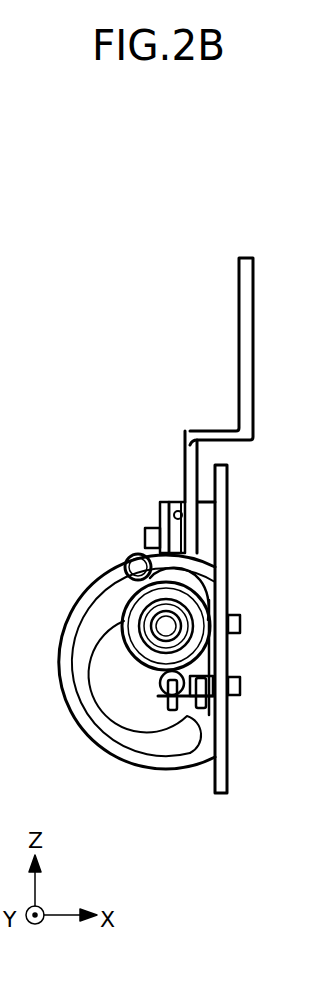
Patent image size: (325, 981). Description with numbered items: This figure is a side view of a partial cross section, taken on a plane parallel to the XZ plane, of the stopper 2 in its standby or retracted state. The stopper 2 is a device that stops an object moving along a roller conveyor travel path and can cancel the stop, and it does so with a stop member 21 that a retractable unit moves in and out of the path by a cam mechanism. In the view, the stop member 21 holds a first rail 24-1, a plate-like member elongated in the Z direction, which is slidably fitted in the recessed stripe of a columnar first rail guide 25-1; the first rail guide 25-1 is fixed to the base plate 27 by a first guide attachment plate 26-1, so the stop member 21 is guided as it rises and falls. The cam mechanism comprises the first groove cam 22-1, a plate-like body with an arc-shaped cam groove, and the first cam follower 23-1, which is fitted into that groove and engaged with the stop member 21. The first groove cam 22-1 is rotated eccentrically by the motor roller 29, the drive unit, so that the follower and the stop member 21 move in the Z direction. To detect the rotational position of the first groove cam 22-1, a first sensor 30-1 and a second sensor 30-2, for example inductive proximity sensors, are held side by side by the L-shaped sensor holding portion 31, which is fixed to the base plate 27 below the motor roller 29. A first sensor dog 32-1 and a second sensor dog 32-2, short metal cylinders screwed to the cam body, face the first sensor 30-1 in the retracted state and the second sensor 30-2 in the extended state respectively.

The stopper 2 is at (265, 225).
The stop member 21 is at (255, 307).
The first rail 24-1 is at (184, 500).
The first rail guide 25-1 is at (177, 502).
The first guide attachment plate 26-1 is at (160, 517).
The second sensor dog 32-2 is at (125, 560).
The first groove cam 22-1 is at (110, 755).
The first cam follower 23-1 is at (183, 573).
The motor roller 29 is at (125, 613).
The base plate 27 is at (228, 772).
The first sensor 30-1 is at (188, 673).
The second sensor 30-2 is at (240, 668).
The first sensor dog 32-1 is at (160, 677).
The sensor holding portion 31 is at (189, 700).